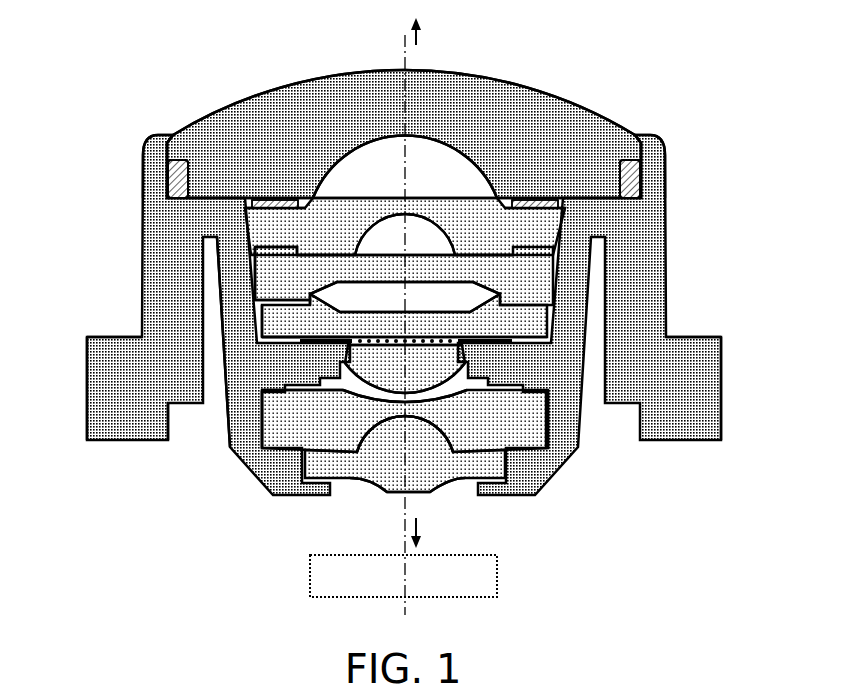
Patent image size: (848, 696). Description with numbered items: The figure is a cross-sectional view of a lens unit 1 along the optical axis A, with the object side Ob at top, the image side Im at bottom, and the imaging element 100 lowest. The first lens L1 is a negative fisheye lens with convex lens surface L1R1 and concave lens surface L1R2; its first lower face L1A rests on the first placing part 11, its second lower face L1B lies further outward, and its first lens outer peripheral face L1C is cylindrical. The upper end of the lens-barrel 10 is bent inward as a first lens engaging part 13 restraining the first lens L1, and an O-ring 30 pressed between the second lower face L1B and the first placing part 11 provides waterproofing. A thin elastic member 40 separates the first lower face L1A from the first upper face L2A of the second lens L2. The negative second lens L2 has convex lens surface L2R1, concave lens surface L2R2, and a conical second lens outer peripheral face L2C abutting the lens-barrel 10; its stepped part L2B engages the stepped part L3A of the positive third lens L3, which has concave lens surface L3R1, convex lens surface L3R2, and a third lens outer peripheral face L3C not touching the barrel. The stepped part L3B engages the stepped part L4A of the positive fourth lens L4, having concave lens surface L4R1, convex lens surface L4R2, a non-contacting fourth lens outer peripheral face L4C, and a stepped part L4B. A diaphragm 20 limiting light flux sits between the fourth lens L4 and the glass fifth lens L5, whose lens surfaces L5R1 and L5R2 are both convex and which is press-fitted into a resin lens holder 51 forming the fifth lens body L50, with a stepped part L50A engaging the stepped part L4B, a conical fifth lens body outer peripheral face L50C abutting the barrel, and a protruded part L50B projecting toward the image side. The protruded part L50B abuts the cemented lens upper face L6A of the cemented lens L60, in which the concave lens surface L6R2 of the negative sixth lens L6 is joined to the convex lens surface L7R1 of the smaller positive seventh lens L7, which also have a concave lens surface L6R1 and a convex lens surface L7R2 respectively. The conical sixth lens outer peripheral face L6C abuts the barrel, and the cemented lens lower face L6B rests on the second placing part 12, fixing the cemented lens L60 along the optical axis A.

The lens unit 1 is at (787, 566).
The lens-barrel 10 is at (90, 442).
The first placing part 11 is at (218, 188).
The second placing part 12 is at (248, 478).
The first lens engaging part 13 is at (170, 136).
The diaphragm 20 is at (525, 352).
The O-ring 30 is at (167, 173).
The elastic member 40 is at (275, 200).
The lens holder 51 is at (307, 355).
The imaging element 100 is at (497, 573).
The first lens L1 is at (538, 185).
The first lower face of the first lens L1A is at (513, 195).
The second lower face of the first lens L1B is at (178, 135).
The first lens outer peripheral face L1C is at (640, 153).
The lens surface on the object side of the first lens L1R1 is at (512, 84).
The lens surface on the image side of the first lens L1R2 is at (358, 148).
The second lens L2 is at (323, 213).
The first upper face of the second lens L2A is at (563, 217).
The stepped part of the second lens L2B is at (177, 252).
The second lens outer peripheral face L2C is at (243, 220).
The lens surface on the object side of the second lens L2R1 is at (388, 195).
The lens surface on the image side of the second lens L2R2 is at (420, 215).
The third lens L3 is at (430, 273).
The stepped part of the third lens L3A is at (250, 263).
The stepped part of the third lens L3B is at (182, 305).
The third lens outer peripheral face L3C is at (257, 293).
The lens surface on the object side of the third lens L3R1 is at (365, 258).
The lens surface on the image side of the third lens L3R2 is at (355, 283).
The fourth lens L4 is at (558, 318).
The stepped part of the fourth lens L4A is at (258, 313).
The stepped part of the fourth lens L4B is at (182, 329).
The fourth lens outer peripheral face L4C is at (262, 327).
The lens surface on the object side of the fourth lens L4R1 is at (433, 311).
The lens surface on the image side of the fourth lens L4R2 is at (530, 420).
The fifth lens L5 is at (331, 437).
The fifth lens body L50 is at (262, 468).
The stepped part of the fifth lens body L50A is at (262, 335).
The protruded part L50B is at (200, 425).
The fifth lens body outer peripheral face L50C is at (255, 372).
The lens surface on the object side of the fifth lens L5R1 is at (262, 440).
The lens surface on the image side of the fifth lens L5R2 is at (520, 480).
The sixth lens L6 is at (453, 440).
The cemented lens L60 is at (548, 432).
The cemented lens upper face L6A is at (545, 478).
The cemented lens lower face L6B is at (188, 465).
The sixth lens outer peripheral face L6C is at (257, 400).
The lens surface on the object side of the sixth lens L6R1 is at (477, 480).
The lens surface on the image side of the sixth lens L6R2 is at (345, 482).
The seventh lens L7 is at (430, 470).
The lens surface on the object side of the seventh lens L7R1 is at (355, 455).
The lens surface on the image side of the seventh lens L7R2 is at (375, 495).
The optical axis A is at (400, 40).
The object side Ob is at (426, 31).
The image side Im is at (426, 533).